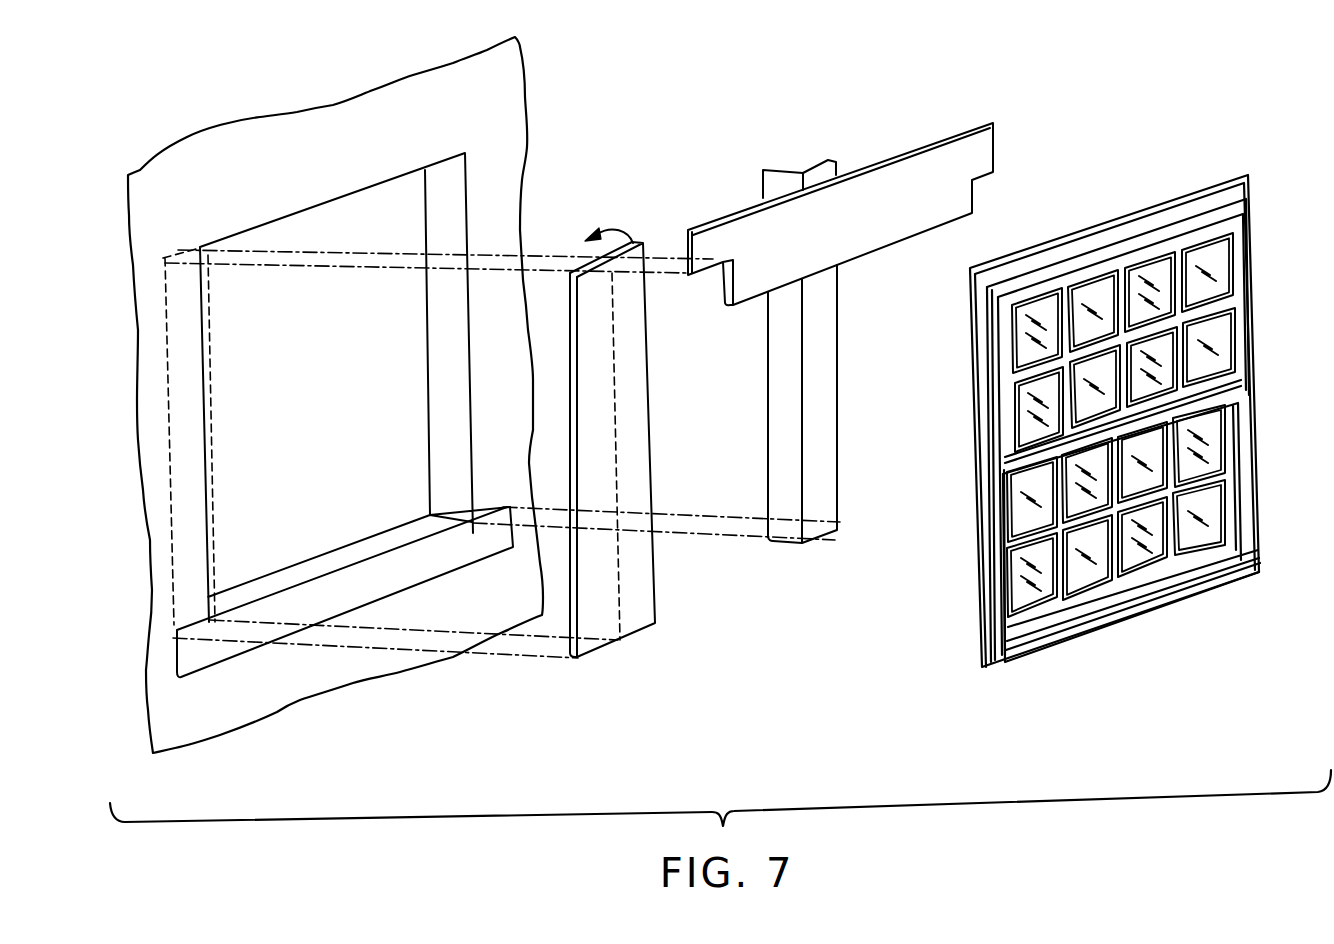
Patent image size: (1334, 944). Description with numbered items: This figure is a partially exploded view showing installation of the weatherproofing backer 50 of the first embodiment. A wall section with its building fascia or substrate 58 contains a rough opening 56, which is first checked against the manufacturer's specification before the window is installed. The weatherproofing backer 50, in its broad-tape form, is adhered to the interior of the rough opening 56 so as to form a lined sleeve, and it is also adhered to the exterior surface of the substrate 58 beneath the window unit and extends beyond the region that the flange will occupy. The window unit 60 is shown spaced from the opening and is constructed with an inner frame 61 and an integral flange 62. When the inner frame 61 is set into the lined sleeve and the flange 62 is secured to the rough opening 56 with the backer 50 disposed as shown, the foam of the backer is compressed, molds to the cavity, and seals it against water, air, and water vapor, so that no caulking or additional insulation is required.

The weatherproofing backer 50 is at (880, 218).
The rough opening 56 is at (333, 197).
The building fascia or substrate 58 is at (466, 105).
The window unit 60 is at (1231, 421).
The inner frame 61 is at (978, 628).
The integral flange 62 is at (1237, 190).